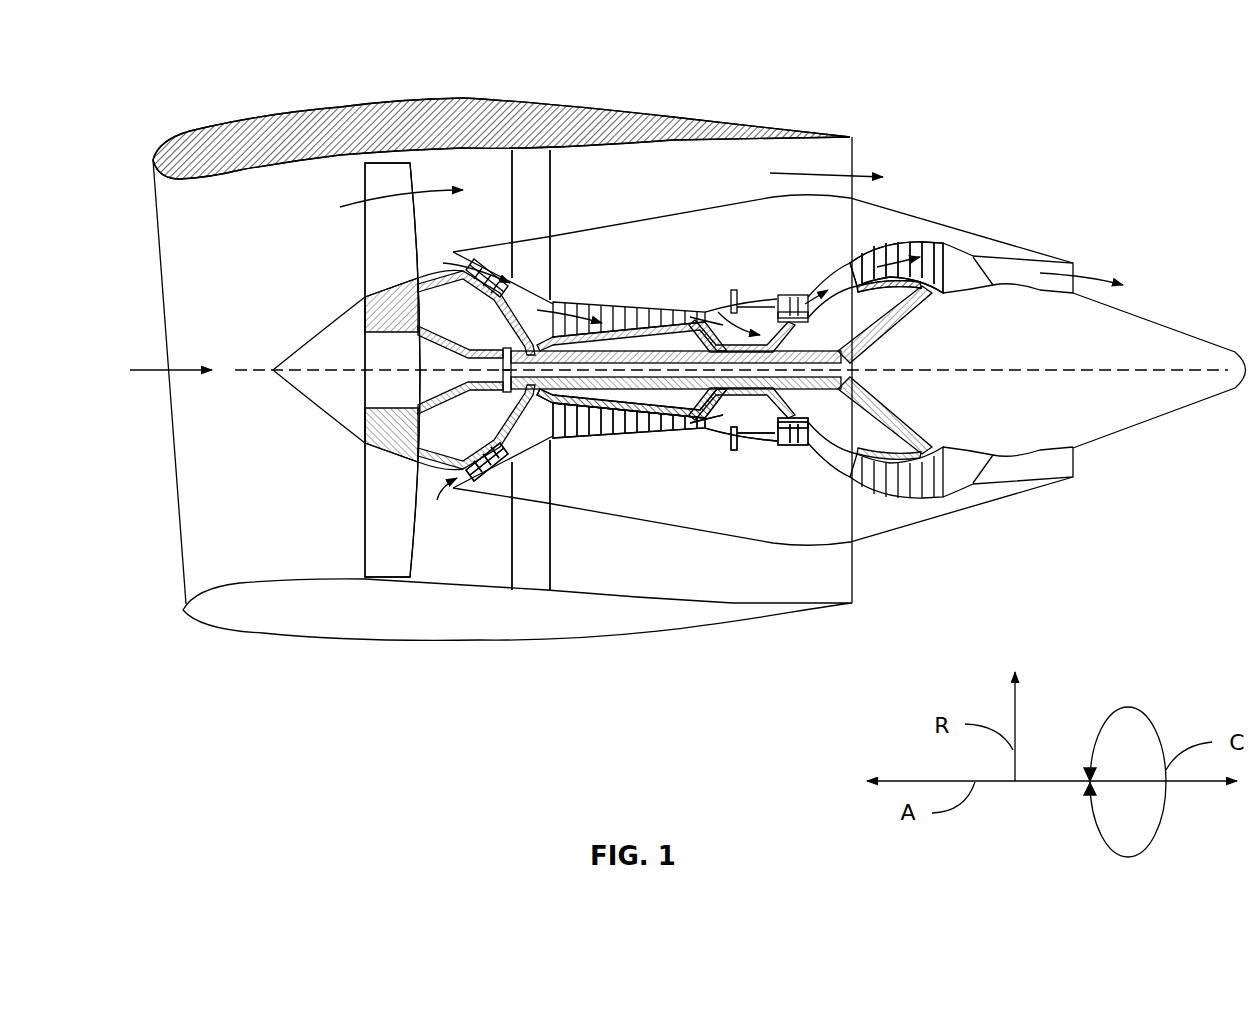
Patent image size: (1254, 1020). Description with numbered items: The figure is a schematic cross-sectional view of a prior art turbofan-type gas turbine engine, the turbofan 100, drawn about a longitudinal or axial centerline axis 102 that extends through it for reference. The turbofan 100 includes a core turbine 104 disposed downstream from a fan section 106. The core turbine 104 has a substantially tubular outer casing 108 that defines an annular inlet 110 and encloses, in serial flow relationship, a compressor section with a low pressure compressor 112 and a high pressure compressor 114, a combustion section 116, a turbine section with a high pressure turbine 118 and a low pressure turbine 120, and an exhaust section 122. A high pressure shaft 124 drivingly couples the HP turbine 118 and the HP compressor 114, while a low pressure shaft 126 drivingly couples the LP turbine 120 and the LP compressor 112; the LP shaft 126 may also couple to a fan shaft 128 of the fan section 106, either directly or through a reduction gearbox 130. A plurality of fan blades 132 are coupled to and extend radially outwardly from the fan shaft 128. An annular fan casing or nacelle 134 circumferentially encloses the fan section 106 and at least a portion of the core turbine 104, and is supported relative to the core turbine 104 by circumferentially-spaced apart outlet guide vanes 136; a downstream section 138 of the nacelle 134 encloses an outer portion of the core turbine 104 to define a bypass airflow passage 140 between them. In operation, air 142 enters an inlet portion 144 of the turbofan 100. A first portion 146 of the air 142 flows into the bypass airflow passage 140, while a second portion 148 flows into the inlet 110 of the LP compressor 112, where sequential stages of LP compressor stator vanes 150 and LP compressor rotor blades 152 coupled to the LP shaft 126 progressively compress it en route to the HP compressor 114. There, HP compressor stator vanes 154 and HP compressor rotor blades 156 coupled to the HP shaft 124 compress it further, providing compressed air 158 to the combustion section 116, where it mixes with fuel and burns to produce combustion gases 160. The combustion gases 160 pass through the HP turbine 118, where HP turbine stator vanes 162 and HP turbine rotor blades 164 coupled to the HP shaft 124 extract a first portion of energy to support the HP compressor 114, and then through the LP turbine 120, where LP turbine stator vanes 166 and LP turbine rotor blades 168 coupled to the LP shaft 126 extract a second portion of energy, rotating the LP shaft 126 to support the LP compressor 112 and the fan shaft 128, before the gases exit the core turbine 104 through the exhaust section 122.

The turbofan 100 is at (990, 107).
The longitudinal centerline axis 102 is at (997, 367).
The core turbine 104 is at (680, 245).
The fan section 106 is at (283, 233).
The outer casing 108 is at (700, 532).
The annular inlet 110 is at (437, 500).
The low pressure compressor 112 is at (508, 455).
The high pressure compressor 114 is at (590, 443).
The combustion section 116 is at (748, 447).
The high pressure turbine 118 is at (818, 430).
The low pressure turbine 120 is at (933, 500).
The exhaust section 122 is at (1078, 268).
The high pressure shaft 124 is at (800, 330).
The low pressure shaft 126 is at (520, 352).
The fan shaft 128 is at (407, 337).
The reduction gearbox 130 is at (517, 413).
The fan blades 132 is at (363, 507).
The nacelle 134 is at (407, 640).
The outlet guide vanes 136 is at (552, 190).
The downstream section 138 is at (757, 112).
The bypass airflow passage 140 is at (694, 183).
The air 142 is at (177, 367).
The inlet portion 144 is at (187, 578).
The first portion of the air 146 is at (377, 200).
The second portion of the air 148 is at (440, 265).
The LP compressor stator vanes 150 is at (478, 488).
The LP compressor rotor blades 152 is at (489, 478).
The HP compressor stator vanes 154 is at (680, 430).
The HP compressor rotor blades 156 is at (686, 427).
The compressed air 158 is at (718, 312).
The combustion gases 160 is at (797, 296).
The HP turbine stator vanes 162 is at (786, 446).
The HP turbine rotor blades 164 is at (790, 413).
The LP turbine stator vanes 166 is at (855, 262).
The LP turbine rotor blades 168 is at (860, 240).